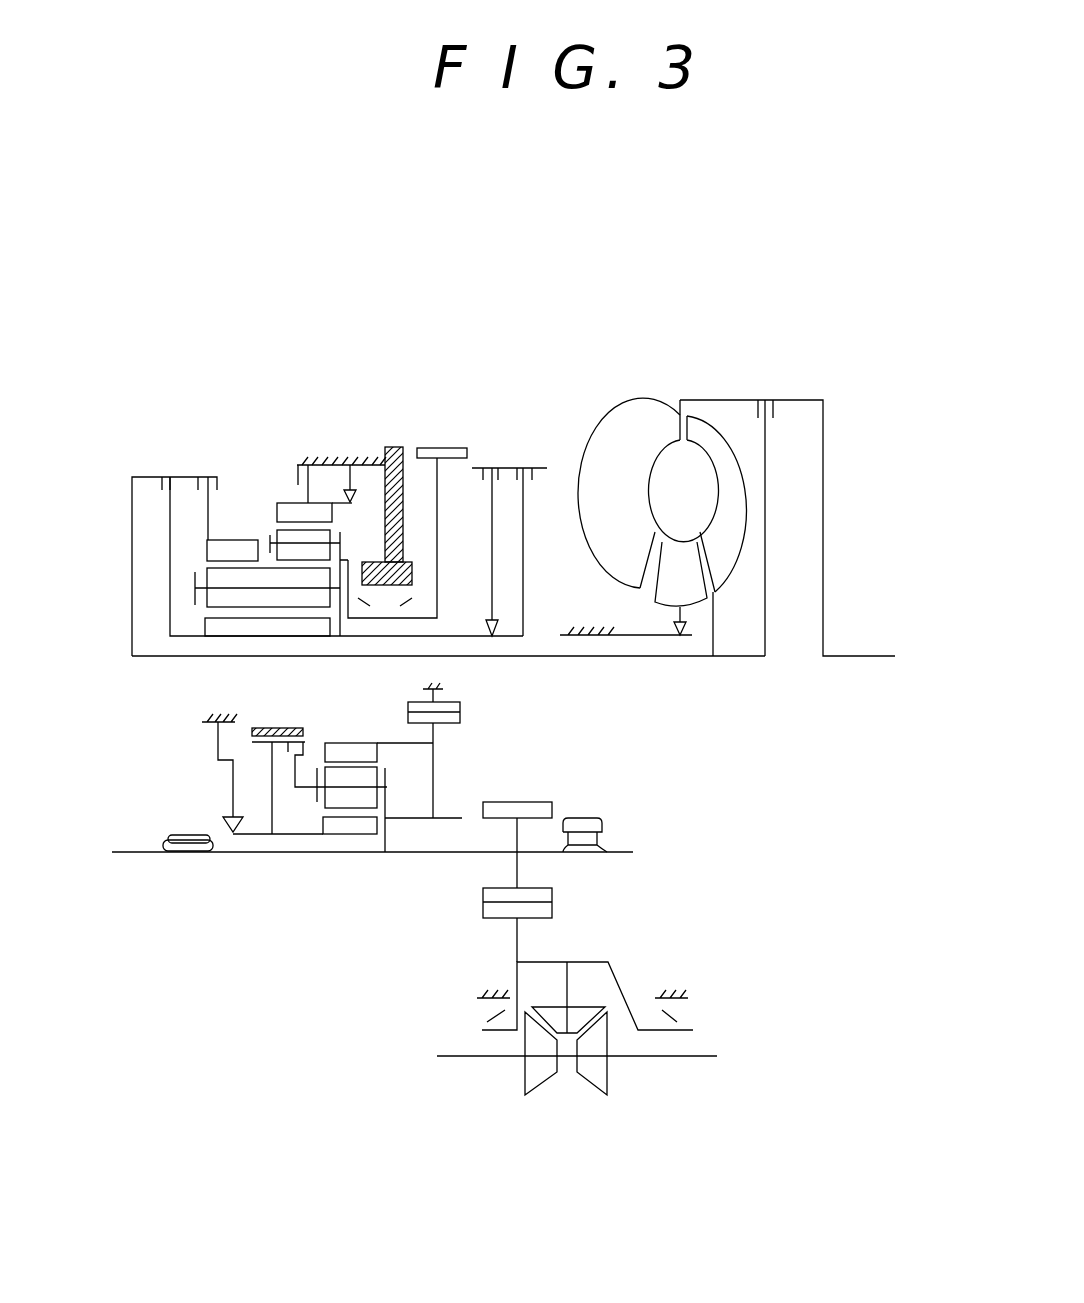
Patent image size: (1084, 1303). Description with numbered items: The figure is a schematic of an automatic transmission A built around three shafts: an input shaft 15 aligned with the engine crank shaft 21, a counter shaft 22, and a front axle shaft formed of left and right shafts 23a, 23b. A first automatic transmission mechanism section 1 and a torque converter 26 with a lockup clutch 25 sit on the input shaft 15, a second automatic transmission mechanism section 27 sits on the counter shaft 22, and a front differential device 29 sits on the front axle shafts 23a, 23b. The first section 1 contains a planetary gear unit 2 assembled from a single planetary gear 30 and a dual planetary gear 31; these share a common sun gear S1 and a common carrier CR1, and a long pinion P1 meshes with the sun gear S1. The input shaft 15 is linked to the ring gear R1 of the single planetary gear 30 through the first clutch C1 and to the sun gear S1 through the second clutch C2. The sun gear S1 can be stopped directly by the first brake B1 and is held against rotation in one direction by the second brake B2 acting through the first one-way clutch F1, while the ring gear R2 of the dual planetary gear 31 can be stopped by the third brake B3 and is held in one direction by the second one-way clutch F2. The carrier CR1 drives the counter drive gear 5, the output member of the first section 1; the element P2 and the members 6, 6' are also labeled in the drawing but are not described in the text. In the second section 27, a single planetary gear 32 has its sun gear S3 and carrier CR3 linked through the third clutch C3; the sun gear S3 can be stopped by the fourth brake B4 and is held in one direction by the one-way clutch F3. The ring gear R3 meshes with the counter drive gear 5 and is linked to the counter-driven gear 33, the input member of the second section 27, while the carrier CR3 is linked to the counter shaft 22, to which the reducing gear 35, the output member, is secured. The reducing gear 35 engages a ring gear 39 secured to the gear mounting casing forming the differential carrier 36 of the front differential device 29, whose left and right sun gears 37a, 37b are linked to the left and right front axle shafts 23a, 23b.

The first automatic transmission mechanism section 1 is at (139, 460).
The automatic transmission A is at (205, 393).
The planetary gear unit 2 is at (301, 399).
The single planetary gear 30 is at (227, 531).
The dual planetary gear 31 is at (283, 490).
The one-way clutch support member 6 is at (367, 468).
The one-way clutch member 6' is at (396, 544).
The counter drive gear 5 is at (437, 448).
The input shaft 15 is at (175, 657).
The engine crank shaft 21 is at (860, 656).
The lockup clutch 25 is at (774, 410).
The torque converter 26 is at (660, 403).
The second automatic transmission mechanism section 27 is at (210, 770).
The single planetary gear 32 is at (358, 708).
The counter-driven gear 33 is at (462, 713).
The reducing gear 35 is at (527, 802).
The ring gear 39 is at (485, 916).
The differential carrier 36 is at (590, 961).
The counter shaft 22 is at (246, 853).
The left front axle shaft 23a is at (480, 1058).
The right front axle shaft 23b is at (693, 1058).
The front differential device 29 is at (592, 1089).
The left sun gear 37a is at (535, 1092).
The right sun gear 37b is at (600, 1092).
The first clutch C1 is at (217, 491).
The second clutch C2 is at (177, 466).
The third clutch C3 is at (289, 755).
The first brake B1 is at (535, 535).
The second brake B2 is at (509, 535).
The third brake B3 is at (340, 468).
The fourth brake B4 is at (281, 720).
The first one-way clutch F1 is at (413, 538).
The second one-way clutch F2 is at (355, 468).
The one-way clutch F3 is at (243, 827).
The ring gear R1 is at (216, 550).
The long pinion P1 is at (217, 599).
The common sun gear S1 is at (266, 628).
The common carrier CR1 is at (341, 596).
The ring gear R2 is at (307, 512).
The second pinion gear P2 is at (318, 553).
The ring gear R3 is at (367, 752).
The sun gear S3 is at (342, 829).
The carrier CR3 is at (397, 798).